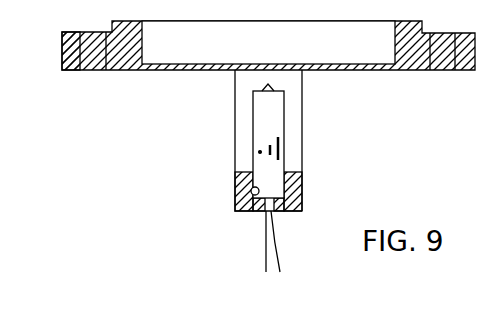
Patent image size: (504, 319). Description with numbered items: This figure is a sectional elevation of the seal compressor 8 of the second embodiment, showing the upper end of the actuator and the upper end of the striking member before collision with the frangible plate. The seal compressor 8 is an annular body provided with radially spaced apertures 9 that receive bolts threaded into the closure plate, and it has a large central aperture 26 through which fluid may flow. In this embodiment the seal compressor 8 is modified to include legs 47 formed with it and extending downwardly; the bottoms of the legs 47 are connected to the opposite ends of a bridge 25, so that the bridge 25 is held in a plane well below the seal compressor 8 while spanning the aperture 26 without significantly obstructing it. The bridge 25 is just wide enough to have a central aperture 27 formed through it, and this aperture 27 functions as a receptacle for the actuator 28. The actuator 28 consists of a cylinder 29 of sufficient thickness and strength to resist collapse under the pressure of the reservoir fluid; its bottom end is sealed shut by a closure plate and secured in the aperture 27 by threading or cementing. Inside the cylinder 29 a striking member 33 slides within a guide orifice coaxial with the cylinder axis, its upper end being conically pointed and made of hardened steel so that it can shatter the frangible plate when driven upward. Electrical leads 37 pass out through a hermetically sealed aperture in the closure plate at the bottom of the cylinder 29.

The seal compressor 8 is at (62, 52).
The radially spaced apertures 9 is at (82, 70).
The aperture 26 is at (268, 42).
The actuator 28 is at (293, 110).
The legs 47 is at (302, 132).
The bridge 25 is at (302, 188).
The cylinder 29 is at (252, 131).
The striking member 33 is at (264, 84).
The aperture 27 is at (251, 192).
The electrical leads 37 is at (273, 222).